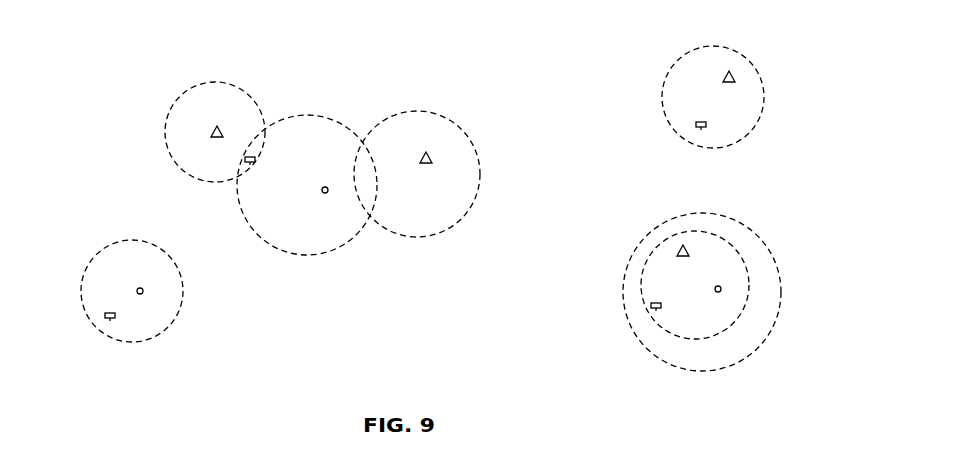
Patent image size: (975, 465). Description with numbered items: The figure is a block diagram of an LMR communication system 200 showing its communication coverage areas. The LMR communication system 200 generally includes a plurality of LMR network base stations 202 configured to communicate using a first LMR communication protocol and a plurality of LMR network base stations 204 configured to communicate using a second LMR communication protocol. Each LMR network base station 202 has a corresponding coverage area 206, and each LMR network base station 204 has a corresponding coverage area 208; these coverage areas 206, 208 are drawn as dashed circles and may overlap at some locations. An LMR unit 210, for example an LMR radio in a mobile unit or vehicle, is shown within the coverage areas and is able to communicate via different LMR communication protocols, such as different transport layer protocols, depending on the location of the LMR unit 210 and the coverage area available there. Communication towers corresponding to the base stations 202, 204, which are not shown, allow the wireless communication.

The LMR communication system 200 is at (121, 33).
The LMR network base station 202 is at (211, 134).
The LMR network base station 204 is at (324, 193).
The coverage area 206 is at (217, 82).
The coverage area 208 is at (307, 115).
The LMR unit 210 is at (250, 165).